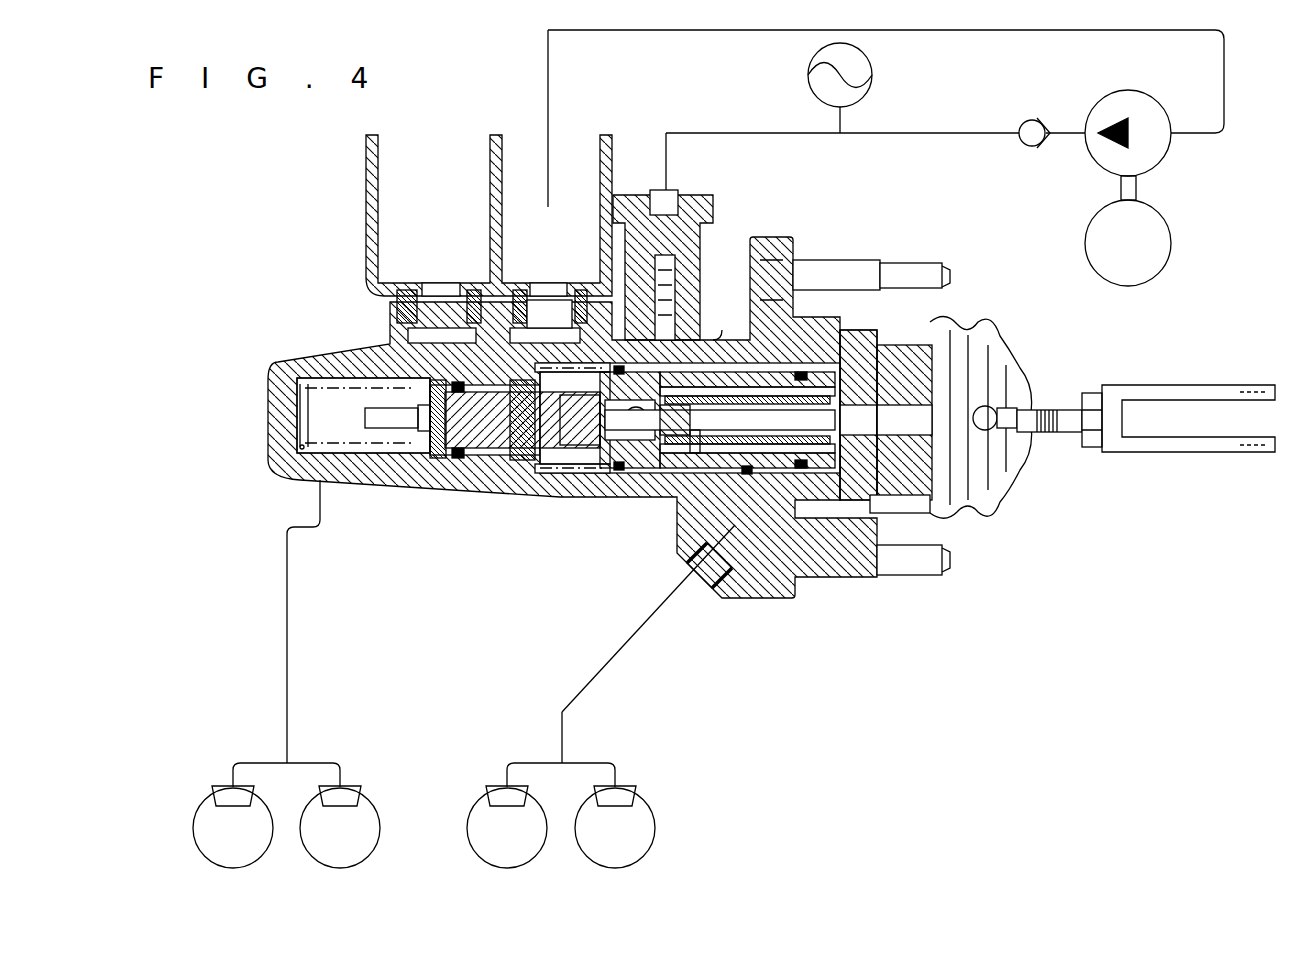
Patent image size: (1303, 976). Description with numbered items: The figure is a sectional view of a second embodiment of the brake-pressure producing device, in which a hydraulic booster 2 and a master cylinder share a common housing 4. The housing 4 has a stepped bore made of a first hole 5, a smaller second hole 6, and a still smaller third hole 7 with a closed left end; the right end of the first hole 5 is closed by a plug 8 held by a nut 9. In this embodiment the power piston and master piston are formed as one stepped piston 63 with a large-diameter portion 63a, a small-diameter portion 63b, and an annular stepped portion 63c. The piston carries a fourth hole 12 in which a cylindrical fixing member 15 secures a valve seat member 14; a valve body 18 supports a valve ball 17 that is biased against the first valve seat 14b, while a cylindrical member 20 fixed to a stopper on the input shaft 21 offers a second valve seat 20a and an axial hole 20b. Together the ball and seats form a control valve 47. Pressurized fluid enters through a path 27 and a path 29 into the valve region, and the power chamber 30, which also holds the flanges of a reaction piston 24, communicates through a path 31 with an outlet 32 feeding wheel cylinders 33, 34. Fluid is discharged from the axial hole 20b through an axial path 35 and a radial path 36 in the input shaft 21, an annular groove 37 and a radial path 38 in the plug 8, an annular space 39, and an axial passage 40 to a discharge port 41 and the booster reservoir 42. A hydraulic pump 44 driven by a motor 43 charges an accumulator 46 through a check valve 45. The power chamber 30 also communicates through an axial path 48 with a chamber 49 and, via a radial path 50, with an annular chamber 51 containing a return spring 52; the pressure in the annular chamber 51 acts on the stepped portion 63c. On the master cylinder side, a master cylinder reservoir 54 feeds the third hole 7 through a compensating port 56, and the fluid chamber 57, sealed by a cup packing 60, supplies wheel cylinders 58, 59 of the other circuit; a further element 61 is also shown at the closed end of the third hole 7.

The hydraulic booster 2 is at (735, 225).
The housing 4 is at (445, 478).
The first hole 5 is at (848, 522).
The second hole 6 is at (600, 470).
The third hole 7 is at (340, 385).
The plug 8 is at (900, 578).
The nut 9 is at (925, 512).
The fourth hole 12 is at (762, 560).
The valve seat member 14 is at (705, 540).
The first valve seat 14b is at (625, 445).
The cylindrical fixing member 15 is at (800, 380).
The valve ball 17 is at (585, 440).
The valve body 18 is at (570, 445).
The cylindrical member 20 is at (755, 345).
The second valve seat 20a is at (650, 465).
The axial hole 20b is at (760, 600).
The input shaft 21 is at (1000, 470).
The reaction piston 24 is at (793, 372).
The path 27 is at (695, 320).
The path 29 is at (712, 520).
The power chamber 30 is at (805, 522).
The path 31 is at (715, 585).
The outlet 32 is at (695, 580).
The wheel cylinder 33 is at (628, 790).
The wheel cylinder 34 is at (488, 790).
The axial path 35 is at (828, 522).
The radial path 36 is at (945, 345).
The annular groove 37 is at (905, 360).
The radial path 38 is at (878, 360).
The annular space 39 is at (862, 345).
The axial passage 40 is at (728, 338).
The discharge port 41 is at (530, 335).
The booster reservoir 42 is at (531, 235).
The motor 43 is at (1133, 280).
The hydraulic pump 44 is at (1158, 148).
The check valve 45 is at (1025, 145).
The accumulator 46 is at (868, 88).
The control valve 47 is at (690, 500).
The axial path 48 is at (578, 330).
The chamber 49 is at (520, 455).
The radial path 50 is at (545, 345).
The annular chamber 51 is at (560, 470).
The return spring 52 is at (545, 460).
The master cylinder reservoir 54 is at (416, 235).
The compensating port 56 is at (440, 360).
The fluid chamber 57 is at (328, 425).
The wheel cylinder 58 is at (350, 790).
The wheel cylinder 59 is at (222, 790).
The cup packing 60 is at (440, 440).
The valve 61 is at (300, 470).
The stepped piston 63 is at (748, 560).
The large-diameter portion 63a is at (822, 340).
The small-diameter portion 63b is at (460, 460).
The annular stepped portion 63c is at (635, 472).